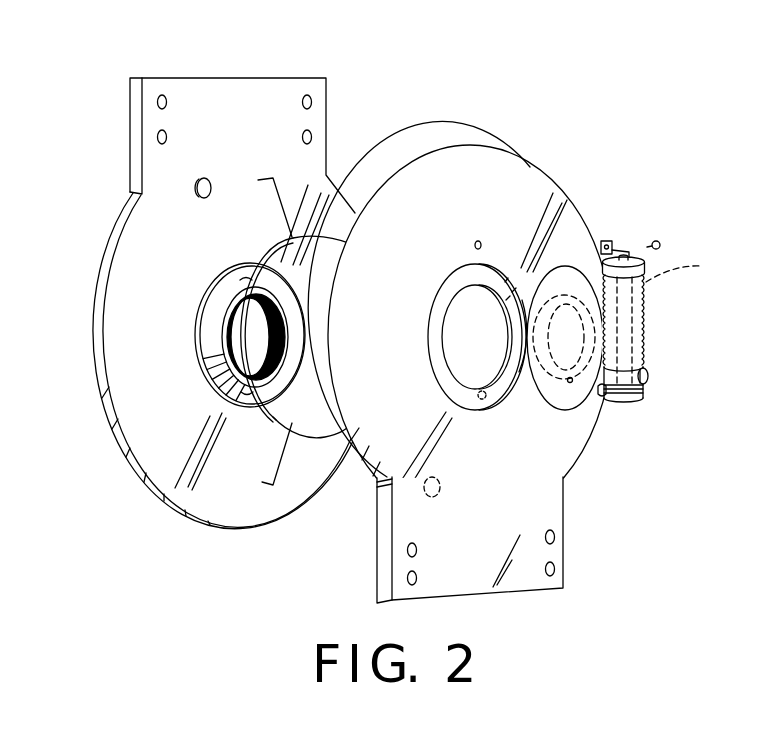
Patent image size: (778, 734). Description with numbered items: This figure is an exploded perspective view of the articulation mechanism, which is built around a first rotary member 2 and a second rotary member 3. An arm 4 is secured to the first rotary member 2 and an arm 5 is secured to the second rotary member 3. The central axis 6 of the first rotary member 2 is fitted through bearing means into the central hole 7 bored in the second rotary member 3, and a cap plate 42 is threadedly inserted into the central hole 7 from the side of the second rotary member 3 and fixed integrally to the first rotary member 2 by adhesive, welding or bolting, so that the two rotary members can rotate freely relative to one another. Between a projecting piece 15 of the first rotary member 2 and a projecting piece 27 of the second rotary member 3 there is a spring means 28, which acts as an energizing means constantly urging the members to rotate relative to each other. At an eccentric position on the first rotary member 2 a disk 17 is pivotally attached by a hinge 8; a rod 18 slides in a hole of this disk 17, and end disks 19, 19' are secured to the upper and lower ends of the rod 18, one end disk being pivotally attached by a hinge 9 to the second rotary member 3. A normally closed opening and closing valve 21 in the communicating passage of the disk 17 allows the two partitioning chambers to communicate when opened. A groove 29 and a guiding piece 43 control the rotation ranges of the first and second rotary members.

The first rotary member 2 is at (118, 326).
The second rotary member 3 is at (438, 175).
The arm 4 is at (206, 96).
The arm 5 is at (522, 580).
The central axis 6 is at (218, 345).
The central hole 7 is at (495, 363).
The hinge 8 is at (566, 392).
The hinge 9 is at (608, 241).
The projecting piece 15 is at (208, 178).
The disk 17 is at (610, 373).
The rod 18 is at (687, 264).
The end disk 19 is at (668, 220).
The end disk 19' is at (658, 413).
The opening and closing valve 21 is at (672, 368).
The projecting piece 27 is at (441, 489).
The spring means 28 is at (280, 268).
The groove 29 is at (272, 424).
The cap plate 42 is at (567, 277).
The guiding piece 43 is at (486, 398).